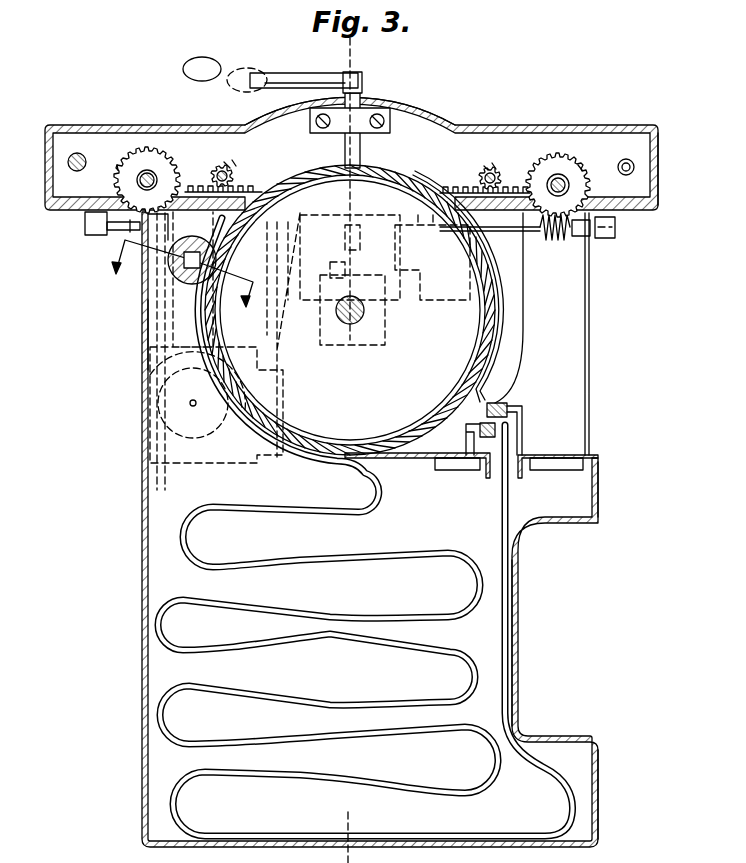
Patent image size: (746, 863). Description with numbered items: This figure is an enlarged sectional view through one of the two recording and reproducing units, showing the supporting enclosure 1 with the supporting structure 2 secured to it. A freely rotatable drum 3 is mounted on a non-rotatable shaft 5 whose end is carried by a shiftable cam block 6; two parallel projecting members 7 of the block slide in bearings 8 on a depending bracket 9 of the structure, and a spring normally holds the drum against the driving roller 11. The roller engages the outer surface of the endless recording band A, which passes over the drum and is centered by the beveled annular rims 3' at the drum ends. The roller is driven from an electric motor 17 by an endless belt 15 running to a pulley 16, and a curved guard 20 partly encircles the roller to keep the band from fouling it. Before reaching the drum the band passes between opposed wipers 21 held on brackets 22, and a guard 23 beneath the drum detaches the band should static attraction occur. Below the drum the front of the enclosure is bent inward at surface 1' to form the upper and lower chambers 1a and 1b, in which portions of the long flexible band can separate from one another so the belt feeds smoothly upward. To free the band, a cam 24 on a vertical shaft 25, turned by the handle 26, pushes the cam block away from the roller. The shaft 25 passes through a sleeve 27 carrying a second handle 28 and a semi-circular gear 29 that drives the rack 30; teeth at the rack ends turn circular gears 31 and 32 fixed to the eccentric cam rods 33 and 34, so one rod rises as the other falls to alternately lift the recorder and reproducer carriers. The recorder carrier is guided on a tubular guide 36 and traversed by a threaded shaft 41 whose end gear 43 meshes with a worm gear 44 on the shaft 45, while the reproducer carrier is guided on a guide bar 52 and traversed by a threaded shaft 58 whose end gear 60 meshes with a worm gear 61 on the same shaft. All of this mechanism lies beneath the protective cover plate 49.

The supporting enclosure 1 is at (346, 529).
The inwardly bent surface 1' is at (535, 643).
The upper chamber 1a is at (598, 795).
The lower chamber 1b is at (596, 515).
The supporting structure 2 is at (45, 200).
The drum 3 is at (350, 310).
The annular rims 3' is at (464, 286).
The non-rotatable shaft 5 is at (380, 47).
The cam block 6 is at (378, 368).
The projecting members 7 is at (382, 320).
The bearings 8 is at (452, 312).
The depending bracket 9 is at (468, 258).
The driving roller 11 is at (180, 270).
The endless belt 15 is at (142, 335).
The pulley 16 is at (158, 413).
The electric motor 17 is at (150, 410).
The curved guard 20 is at (197, 300).
The wipers 21 is at (480, 428).
The brackets 22 is at (524, 420).
The guard 23 is at (415, 458).
The cam 24 is at (330, 268).
The vertical shaft 25 is at (345, 232).
The handle 26 is at (184, 70).
The sleeve 27 is at (361, 148).
The handle 28 is at (243, 88).
The semi-circular gear 29 is at (400, 184).
The rack 30 is at (470, 187).
The circular gear 31 is at (497, 172).
The circular gear 32 is at (233, 176).
The cam rod 33 is at (488, 170).
The cam rod 34 is at (228, 166).
The tubular guide 36 is at (635, 167).
The threaded shaft 41 is at (560, 182).
The circular end gear 43 is at (578, 165).
The worm gear 44 is at (560, 242).
The shaft 45 is at (108, 228).
The cover plate 49 is at (659, 140).
The guide bar 52 is at (68, 162).
The threaded shaft 58 is at (157, 172).
The circular end gear 60 is at (118, 165).
The worm gear 61 is at (125, 230).
The endless recording band A is at (218, 508).